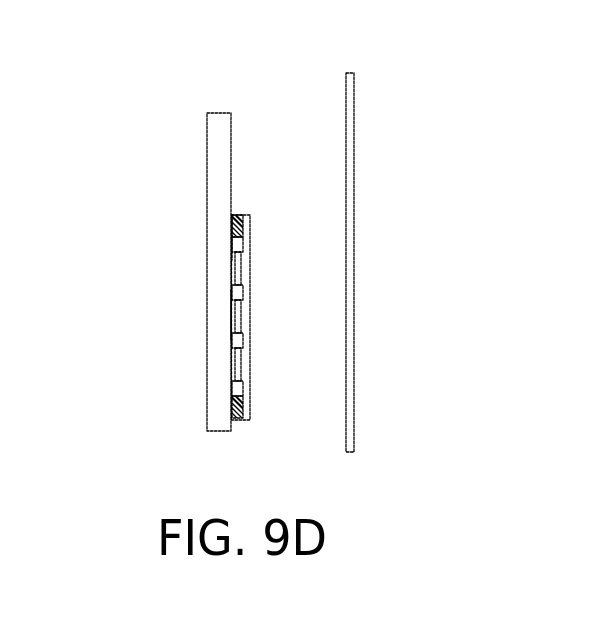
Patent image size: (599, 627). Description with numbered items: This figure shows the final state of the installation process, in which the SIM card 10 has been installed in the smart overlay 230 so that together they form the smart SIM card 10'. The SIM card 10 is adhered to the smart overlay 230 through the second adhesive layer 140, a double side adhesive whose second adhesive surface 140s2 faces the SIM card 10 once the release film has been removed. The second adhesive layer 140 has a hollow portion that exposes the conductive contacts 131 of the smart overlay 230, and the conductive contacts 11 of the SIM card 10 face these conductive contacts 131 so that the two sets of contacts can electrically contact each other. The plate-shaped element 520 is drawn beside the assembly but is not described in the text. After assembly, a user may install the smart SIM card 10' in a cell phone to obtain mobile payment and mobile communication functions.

The smart SIM card 10' is at (217, 233).
The SIM card 10 is at (199, 272).
The conductive contacts 11 is at (231, 316).
The second adhesive layer 140 is at (231, 226).
The second adhesive surface 140s2 is at (231, 232).
The conductive contacts 131 is at (244, 272).
The smart overlay 230 is at (244, 318).
The cover plate 520 is at (354, 254).